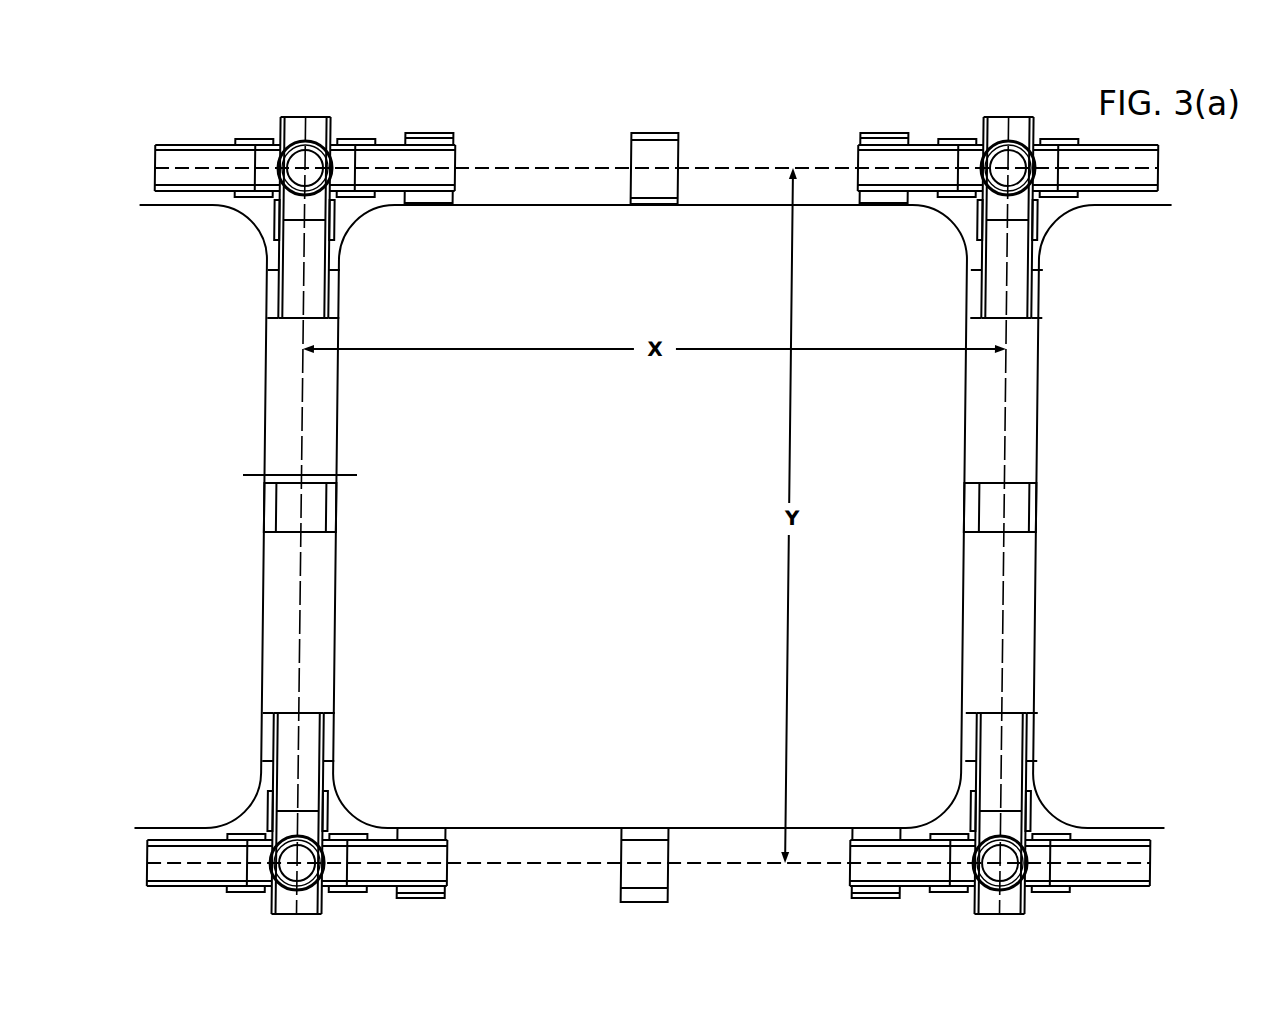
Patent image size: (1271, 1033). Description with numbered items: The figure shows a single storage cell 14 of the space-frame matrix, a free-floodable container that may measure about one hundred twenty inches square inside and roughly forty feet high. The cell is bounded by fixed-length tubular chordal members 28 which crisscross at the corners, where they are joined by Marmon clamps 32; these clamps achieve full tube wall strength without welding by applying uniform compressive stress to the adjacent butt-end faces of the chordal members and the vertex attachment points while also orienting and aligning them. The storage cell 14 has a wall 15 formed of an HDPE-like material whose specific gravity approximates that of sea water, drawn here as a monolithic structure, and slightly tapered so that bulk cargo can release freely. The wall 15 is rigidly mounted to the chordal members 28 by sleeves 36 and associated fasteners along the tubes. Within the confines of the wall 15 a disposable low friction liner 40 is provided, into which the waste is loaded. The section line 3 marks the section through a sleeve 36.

The storage cell 14 is at (590, 186).
The wall 15 is at (715, 205).
The chordal member 28 is at (397, 160).
The Marmon clamp 32 is at (357, 142).
The sleeve 36 is at (887, 143).
The disposable low friction liner 40 is at (521, 222).
The section line 3- 3 is at (360, 500).